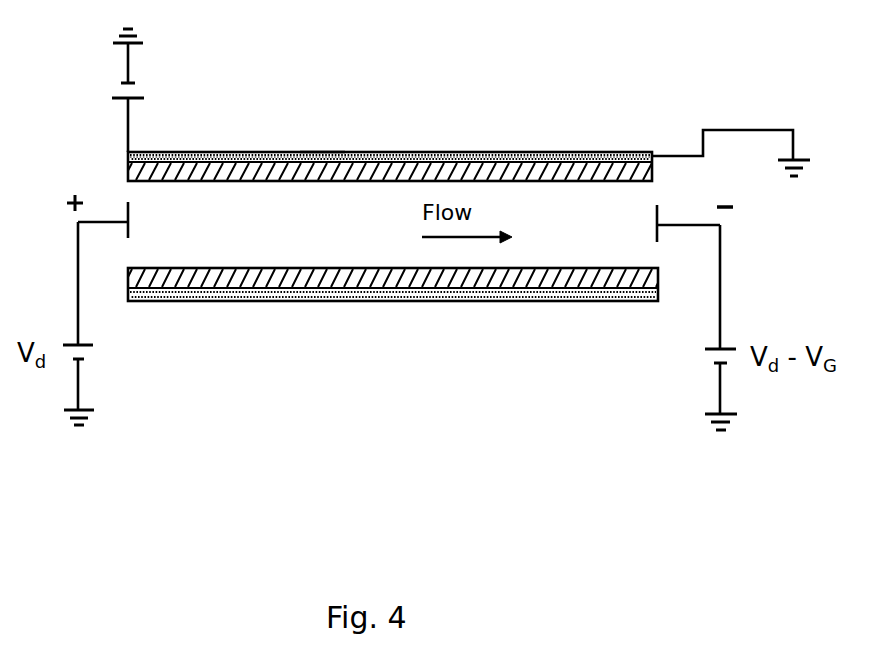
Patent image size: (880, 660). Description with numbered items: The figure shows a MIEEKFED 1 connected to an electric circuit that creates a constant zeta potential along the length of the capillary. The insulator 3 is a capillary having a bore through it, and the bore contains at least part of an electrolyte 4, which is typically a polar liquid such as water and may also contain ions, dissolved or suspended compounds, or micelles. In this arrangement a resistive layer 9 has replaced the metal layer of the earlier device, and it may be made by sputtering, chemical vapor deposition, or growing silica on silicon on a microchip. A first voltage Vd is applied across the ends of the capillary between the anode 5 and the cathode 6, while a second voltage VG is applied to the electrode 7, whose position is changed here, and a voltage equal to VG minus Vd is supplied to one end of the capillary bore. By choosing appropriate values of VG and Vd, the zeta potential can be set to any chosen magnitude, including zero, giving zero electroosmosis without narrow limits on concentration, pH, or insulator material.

The MIEEKFED 1 is at (387, 144).
The insulator 3 is at (305, 166).
The resistive layer 9 is at (323, 146).
The electrolyte 4 is at (394, 269).
The anode 5 is at (115, 220).
The cathode 6 is at (674, 223).
The electrode 7 is at (136, 90).